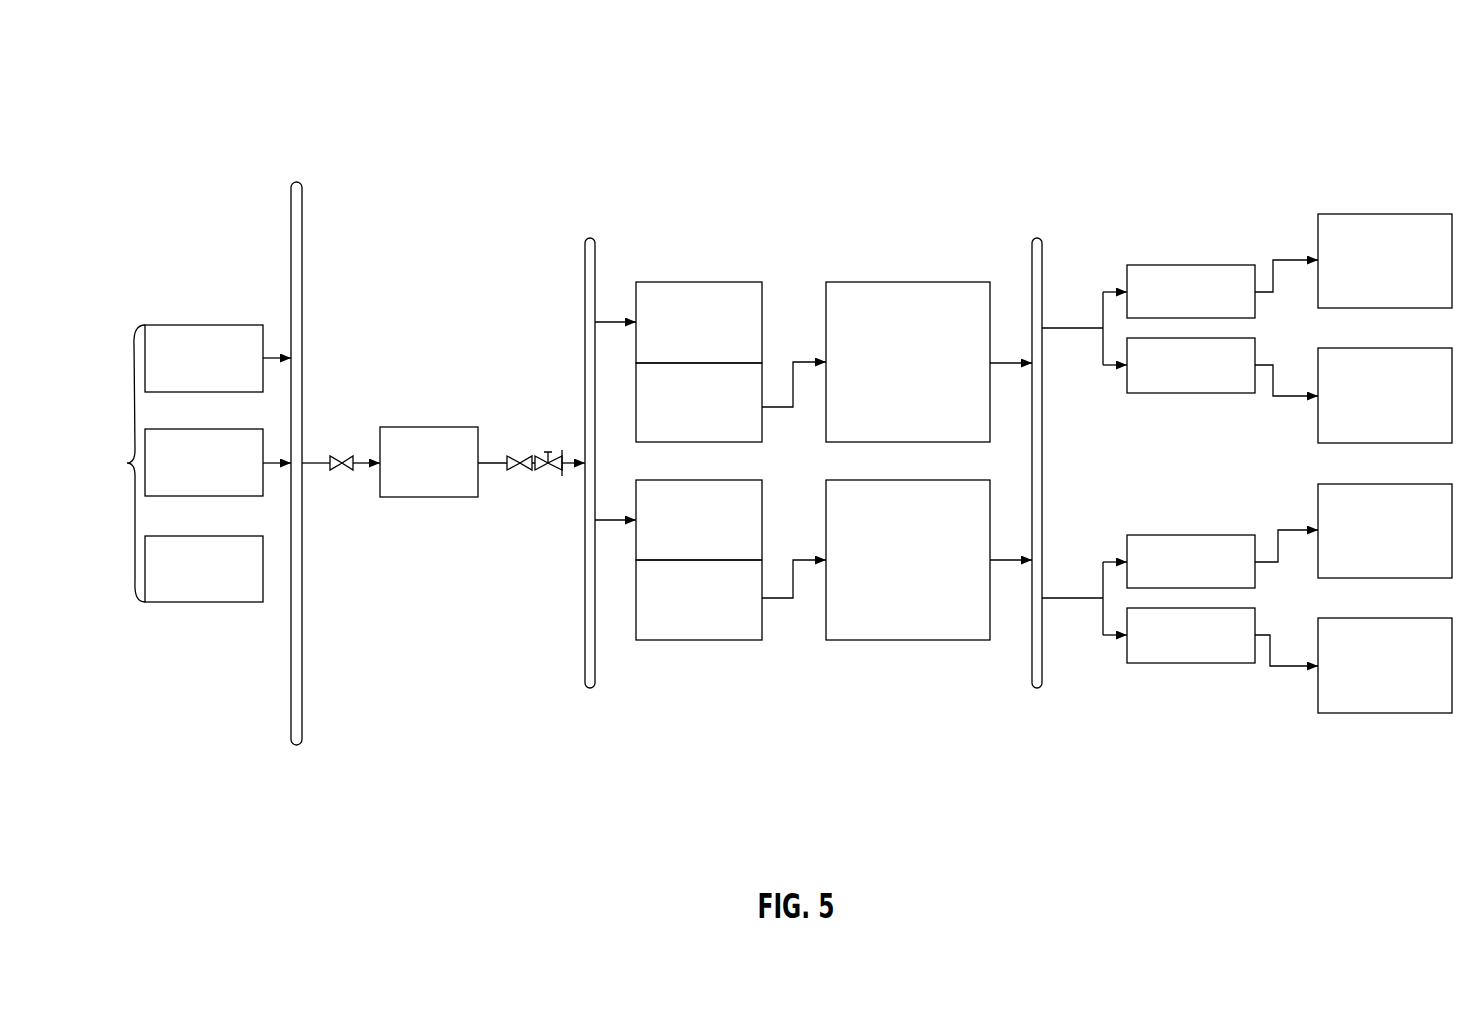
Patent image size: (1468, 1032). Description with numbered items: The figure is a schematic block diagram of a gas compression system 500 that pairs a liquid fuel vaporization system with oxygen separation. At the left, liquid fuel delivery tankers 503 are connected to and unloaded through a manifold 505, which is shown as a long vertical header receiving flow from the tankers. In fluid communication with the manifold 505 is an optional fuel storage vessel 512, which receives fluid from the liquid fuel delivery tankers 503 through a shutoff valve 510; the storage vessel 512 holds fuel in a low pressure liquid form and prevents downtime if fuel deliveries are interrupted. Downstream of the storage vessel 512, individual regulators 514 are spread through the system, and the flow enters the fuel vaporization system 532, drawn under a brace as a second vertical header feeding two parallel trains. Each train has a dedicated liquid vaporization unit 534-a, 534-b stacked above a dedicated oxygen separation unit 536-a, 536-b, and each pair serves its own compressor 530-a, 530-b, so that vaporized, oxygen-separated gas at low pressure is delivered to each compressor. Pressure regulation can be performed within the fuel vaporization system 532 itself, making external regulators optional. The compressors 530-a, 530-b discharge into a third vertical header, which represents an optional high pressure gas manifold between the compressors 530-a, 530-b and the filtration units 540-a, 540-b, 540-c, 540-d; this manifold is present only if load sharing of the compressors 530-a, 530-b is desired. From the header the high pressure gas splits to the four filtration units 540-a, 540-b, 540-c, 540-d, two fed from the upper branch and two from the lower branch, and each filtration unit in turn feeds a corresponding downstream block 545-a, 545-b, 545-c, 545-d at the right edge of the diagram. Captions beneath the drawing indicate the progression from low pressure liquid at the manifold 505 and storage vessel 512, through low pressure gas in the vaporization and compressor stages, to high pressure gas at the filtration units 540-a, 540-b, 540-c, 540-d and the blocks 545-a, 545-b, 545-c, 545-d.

The gas compression system 500 is at (197, 64).
The liquid fuel delivery tankers 503 is at (188, 463).
The manifold 505 is at (291, 218).
The shutoff valve 510 is at (342, 470).
The fuel storage vessel 512 is at (406, 475).
The regulators 514 is at (522, 470).
The fuel vaporization system 532 is at (585, 221).
The liquid vaporization unit 534-a is at (669, 342).
The oxygen separation unit 536-a is at (669, 418).
The compressor 530-a is at (875, 375).
The liquid vaporization unit 534-b is at (669, 533).
The oxygen separation unit 536-b is at (669, 613).
The compressor 530-b is at (875, 573).
The filtration unit 540-a is at (1157, 306).
The filtration unit 540-b is at (1157, 379).
The filtration unit 540-c is at (1157, 576).
The filtration unit 540-d is at (1157, 649).
The high pressure gas tank 545-a is at (1352, 274).
The high pressure gas tank 545-b is at (1352, 409).
The high pressure gas tank 545-c is at (1352, 544).
The high pressure gas tank 545-d is at (1352, 679).